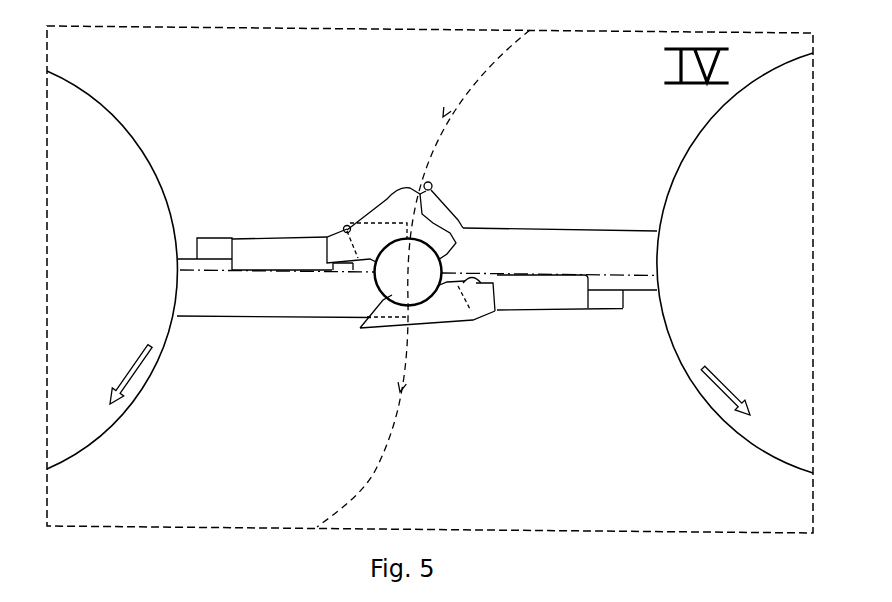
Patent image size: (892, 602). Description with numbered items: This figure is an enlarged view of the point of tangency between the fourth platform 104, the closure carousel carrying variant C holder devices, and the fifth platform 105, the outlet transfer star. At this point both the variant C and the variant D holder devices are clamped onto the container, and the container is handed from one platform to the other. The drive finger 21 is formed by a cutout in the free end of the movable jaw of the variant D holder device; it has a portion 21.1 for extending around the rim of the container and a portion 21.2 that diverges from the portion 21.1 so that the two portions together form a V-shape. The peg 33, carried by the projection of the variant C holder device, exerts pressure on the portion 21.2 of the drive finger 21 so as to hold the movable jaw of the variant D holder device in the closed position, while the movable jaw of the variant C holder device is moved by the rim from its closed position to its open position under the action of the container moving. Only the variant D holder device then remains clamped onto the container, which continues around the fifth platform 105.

The drive finger 21 is at (383, 200).
The portion for extending around the rim 21.1 is at (460, 217).
The diverging portion of the drive finger 21.2 is at (420, 191).
The peg 33 is at (432, 182).
The fourth platform 104 is at (745, 430).
The fifth platform 105 is at (108, 422).